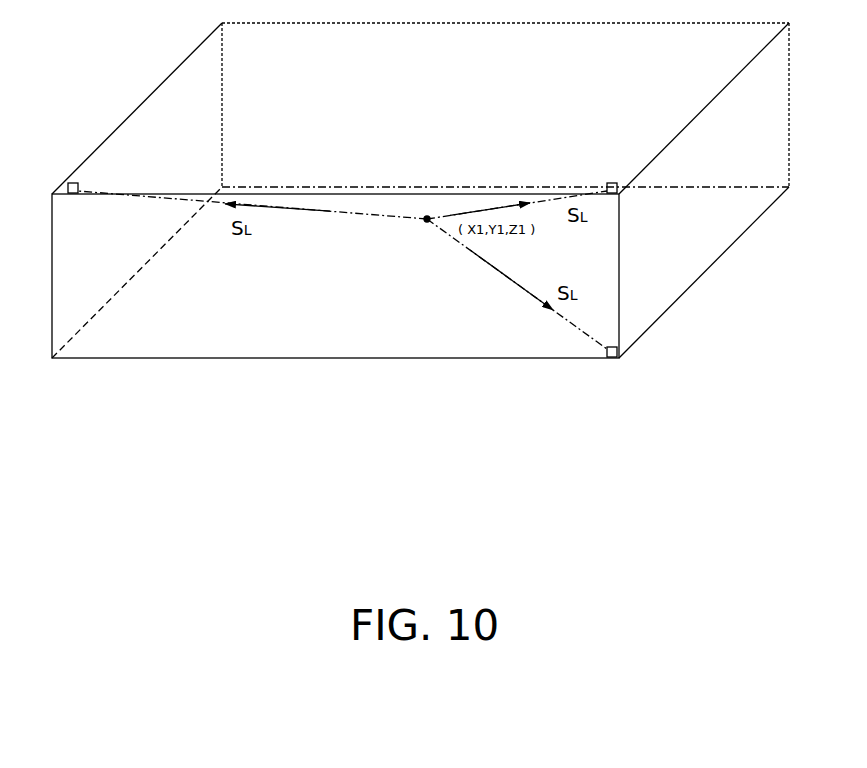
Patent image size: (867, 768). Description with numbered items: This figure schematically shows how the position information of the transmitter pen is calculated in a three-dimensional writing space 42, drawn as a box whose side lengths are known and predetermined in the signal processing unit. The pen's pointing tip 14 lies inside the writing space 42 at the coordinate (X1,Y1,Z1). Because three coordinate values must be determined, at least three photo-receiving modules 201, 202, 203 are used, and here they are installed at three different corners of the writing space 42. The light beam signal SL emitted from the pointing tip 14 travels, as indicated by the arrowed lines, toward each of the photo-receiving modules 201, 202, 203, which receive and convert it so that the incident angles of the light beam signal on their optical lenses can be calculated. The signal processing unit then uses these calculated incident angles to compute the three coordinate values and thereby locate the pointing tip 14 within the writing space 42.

The writing space 42 is at (311, 304).
The pointing tip 14 is at (427, 222).
The photo-receiving module 201 is at (68, 183).
The photo-receiving module 202 is at (607, 183).
The photo-receiving module 203 is at (612, 358).